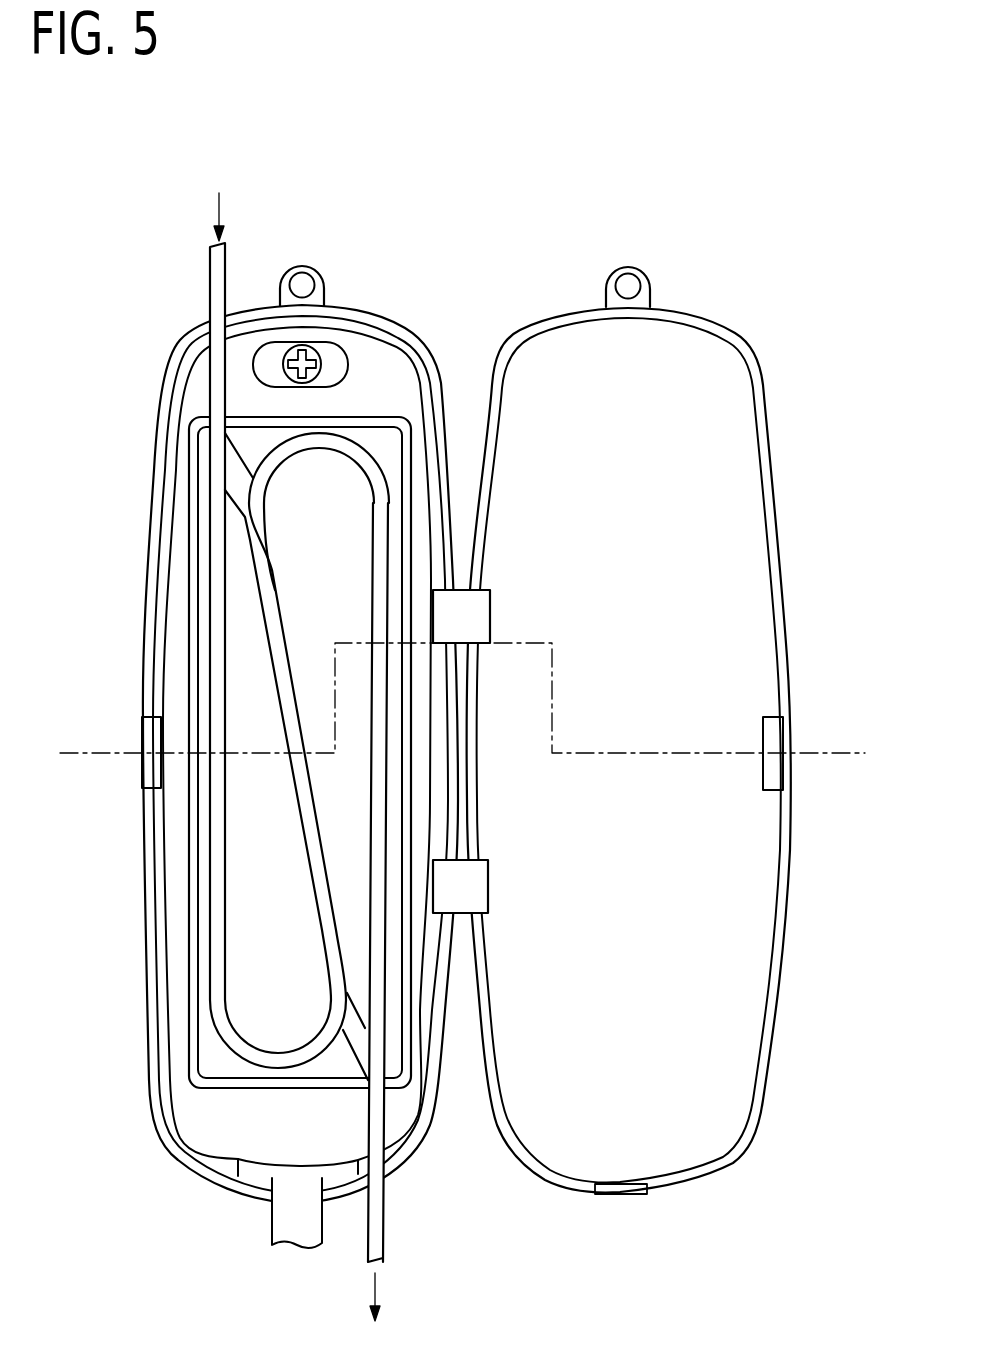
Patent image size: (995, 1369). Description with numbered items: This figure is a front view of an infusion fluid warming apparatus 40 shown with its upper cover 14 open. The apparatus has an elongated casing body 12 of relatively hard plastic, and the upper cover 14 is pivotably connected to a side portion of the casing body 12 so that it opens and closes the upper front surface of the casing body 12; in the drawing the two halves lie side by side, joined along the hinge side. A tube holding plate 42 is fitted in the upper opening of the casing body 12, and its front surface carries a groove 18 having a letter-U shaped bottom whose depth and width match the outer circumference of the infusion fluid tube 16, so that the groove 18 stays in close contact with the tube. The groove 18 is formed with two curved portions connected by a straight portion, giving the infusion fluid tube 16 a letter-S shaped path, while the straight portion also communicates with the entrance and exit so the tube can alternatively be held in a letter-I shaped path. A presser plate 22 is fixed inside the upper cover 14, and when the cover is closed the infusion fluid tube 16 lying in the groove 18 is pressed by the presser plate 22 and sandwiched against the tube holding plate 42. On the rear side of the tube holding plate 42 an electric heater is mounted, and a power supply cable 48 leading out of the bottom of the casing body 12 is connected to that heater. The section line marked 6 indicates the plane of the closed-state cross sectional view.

The infusion fluid warming apparatus 40 is at (468, 686).
The casing body 12 is at (176, 1156).
The upper cover 14 is at (752, 1138).
The presser plate 22 is at (747, 970).
The tube holding plate 42 is at (205, 1058).
The power supply cable 48 is at (282, 1220).
The infusion fluid tube 16 is at (218, 268).
The groove 18 is at (378, 522).
The section line 6- 6 is at (848, 758).